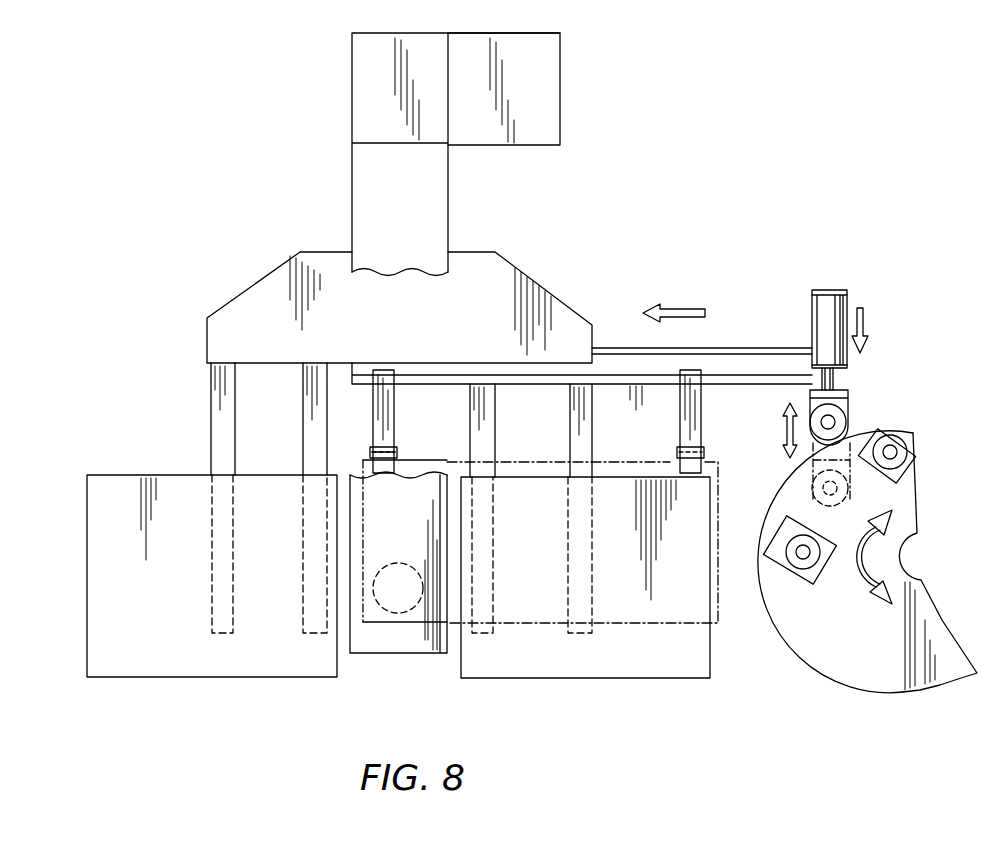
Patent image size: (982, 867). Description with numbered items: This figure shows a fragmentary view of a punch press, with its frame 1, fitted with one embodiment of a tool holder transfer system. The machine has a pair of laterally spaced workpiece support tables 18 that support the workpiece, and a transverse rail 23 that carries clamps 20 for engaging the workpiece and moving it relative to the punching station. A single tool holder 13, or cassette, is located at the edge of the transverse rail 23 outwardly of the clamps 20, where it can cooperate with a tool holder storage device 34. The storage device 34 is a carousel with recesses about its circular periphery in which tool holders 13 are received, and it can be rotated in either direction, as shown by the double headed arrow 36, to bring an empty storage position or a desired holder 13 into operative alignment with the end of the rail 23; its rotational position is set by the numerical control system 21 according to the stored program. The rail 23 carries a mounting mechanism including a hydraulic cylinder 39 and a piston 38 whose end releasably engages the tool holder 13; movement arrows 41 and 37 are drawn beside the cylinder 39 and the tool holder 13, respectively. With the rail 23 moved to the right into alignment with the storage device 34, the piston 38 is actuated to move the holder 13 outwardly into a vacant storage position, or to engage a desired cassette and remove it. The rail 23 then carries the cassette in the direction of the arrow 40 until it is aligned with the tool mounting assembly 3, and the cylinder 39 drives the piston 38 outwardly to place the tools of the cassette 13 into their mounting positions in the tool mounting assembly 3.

The frame 1 is at (448, 193).
The numerical control system 21 is at (548, 92).
The clamps 20 is at (385, 395).
The transverse rail 23 is at (759, 366).
The arrow 40 is at (683, 310).
The tool mounting assembly 3 is at (398, 597).
The workpiece support tables 18 is at (298, 650).
The hydraulic cylinder 39 is at (829, 294).
The downward movement arrow 41 is at (866, 326).
The piston 38 is at (835, 379).
The tool holder 13 is at (881, 469).
The vertical movement arrow 37 is at (780, 430).
The tool holder storage device 34 is at (864, 672).
The double headed arrow 36 is at (860, 562).